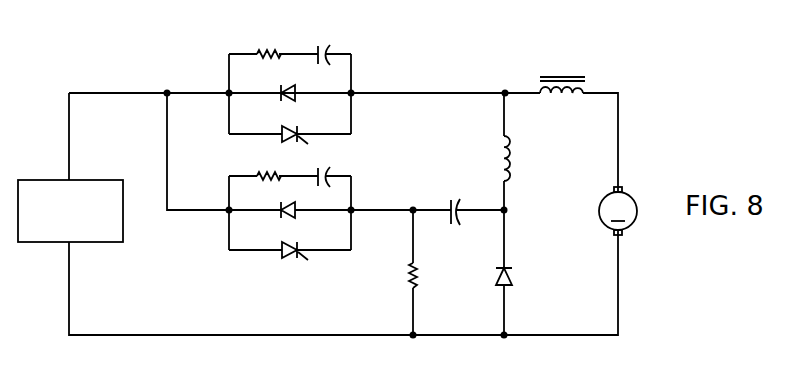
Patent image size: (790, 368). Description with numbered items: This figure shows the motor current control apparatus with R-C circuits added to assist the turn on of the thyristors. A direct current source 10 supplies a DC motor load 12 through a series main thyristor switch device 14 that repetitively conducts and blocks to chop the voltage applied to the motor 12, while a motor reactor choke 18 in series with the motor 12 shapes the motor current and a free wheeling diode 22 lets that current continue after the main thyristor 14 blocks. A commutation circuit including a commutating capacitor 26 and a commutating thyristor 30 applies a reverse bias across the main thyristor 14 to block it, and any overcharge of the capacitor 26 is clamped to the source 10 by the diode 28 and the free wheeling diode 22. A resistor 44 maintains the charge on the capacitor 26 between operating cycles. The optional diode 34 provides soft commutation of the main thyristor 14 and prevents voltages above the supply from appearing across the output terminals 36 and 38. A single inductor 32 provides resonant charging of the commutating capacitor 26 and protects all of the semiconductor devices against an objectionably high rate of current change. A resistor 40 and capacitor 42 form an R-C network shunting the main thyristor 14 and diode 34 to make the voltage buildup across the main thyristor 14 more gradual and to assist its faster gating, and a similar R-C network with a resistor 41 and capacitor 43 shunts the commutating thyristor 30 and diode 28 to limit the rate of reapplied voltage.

The direct current source 10 is at (95, 180).
The DC motor load 12 is at (599, 203).
The main thyristor switch device 14 is at (292, 125).
The motor reactor choke 18 is at (568, 99).
The free wheeling diode 22 is at (495, 276).
The commutating capacitor 26 is at (457, 200).
The diode 28 is at (288, 203).
The commutating thyristor 30 is at (297, 257).
The inductor 32 is at (503, 144).
The diode 34 is at (285, 84).
The output terminal 36 is at (504, 90).
The output terminal 38 is at (507, 335).
The resistor 40 is at (259, 47).
The resistor 41 is at (262, 172).
The capacitor 42 is at (326, 45).
The capacitor 43 is at (326, 167).
The resistor 44 is at (422, 275).